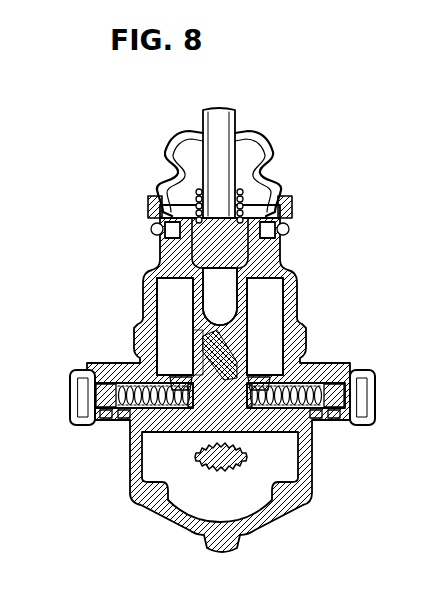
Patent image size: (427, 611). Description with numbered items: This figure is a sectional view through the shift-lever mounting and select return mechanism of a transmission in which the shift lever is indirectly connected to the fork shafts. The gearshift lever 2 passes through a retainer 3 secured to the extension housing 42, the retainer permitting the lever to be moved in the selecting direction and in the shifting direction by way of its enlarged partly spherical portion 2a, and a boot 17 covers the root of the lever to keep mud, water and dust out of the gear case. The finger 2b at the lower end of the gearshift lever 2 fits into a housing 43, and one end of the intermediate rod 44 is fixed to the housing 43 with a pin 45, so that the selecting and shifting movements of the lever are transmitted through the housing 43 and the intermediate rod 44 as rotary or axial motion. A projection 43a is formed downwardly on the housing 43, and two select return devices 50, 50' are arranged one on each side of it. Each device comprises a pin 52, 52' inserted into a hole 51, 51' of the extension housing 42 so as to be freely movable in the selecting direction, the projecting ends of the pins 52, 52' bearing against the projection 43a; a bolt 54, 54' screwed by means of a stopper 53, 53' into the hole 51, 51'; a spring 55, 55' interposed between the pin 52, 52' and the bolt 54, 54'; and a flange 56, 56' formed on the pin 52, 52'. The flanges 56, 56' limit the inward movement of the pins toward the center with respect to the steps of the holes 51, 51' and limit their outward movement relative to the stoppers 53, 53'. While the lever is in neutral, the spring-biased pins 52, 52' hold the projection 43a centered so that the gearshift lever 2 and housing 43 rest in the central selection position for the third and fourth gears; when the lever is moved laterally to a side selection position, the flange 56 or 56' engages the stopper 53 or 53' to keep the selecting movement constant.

The gearshift lever 2 is at (236, 120).
The enlarged partly spherical portion 2a is at (258, 236).
The finger 2b is at (232, 312).
The retainer 3 is at (298, 286).
The boot 17 is at (268, 152).
The extension housing 42 is at (177, 517).
The housing 43 is at (198, 310).
The projection 43a is at (252, 440).
The intermediate rod 44 is at (240, 350).
The pin 45 is at (200, 348).
The select return device 50 is at (76, 379).
The select return device 50' is at (369, 379).
The hole 51 is at (176, 372).
The hole 51' is at (264, 372).
The pin 52 is at (175, 418).
The pin 52' is at (271, 431).
The stopper 53 is at (99, 428).
The stopper 53' is at (333, 374).
The bolt 54 is at (109, 397).
The bolt 54' is at (334, 397).
The spring 55 is at (79, 436).
The spring 55' is at (358, 436).
The flange 56 is at (111, 454).
The flange 56' is at (335, 453).